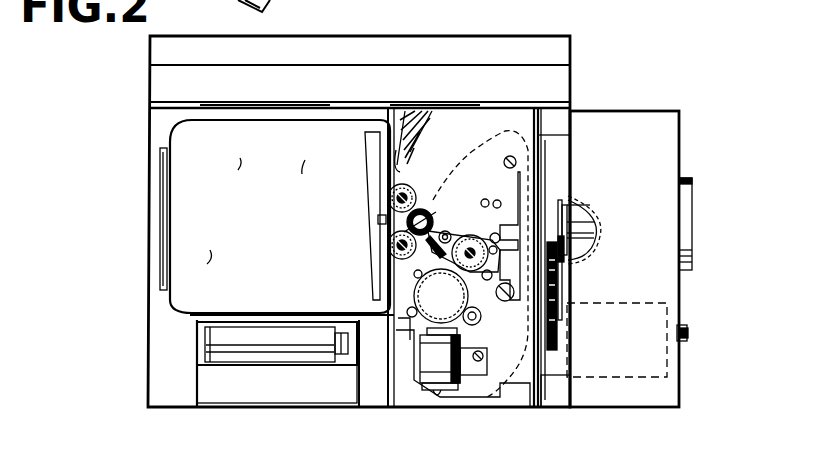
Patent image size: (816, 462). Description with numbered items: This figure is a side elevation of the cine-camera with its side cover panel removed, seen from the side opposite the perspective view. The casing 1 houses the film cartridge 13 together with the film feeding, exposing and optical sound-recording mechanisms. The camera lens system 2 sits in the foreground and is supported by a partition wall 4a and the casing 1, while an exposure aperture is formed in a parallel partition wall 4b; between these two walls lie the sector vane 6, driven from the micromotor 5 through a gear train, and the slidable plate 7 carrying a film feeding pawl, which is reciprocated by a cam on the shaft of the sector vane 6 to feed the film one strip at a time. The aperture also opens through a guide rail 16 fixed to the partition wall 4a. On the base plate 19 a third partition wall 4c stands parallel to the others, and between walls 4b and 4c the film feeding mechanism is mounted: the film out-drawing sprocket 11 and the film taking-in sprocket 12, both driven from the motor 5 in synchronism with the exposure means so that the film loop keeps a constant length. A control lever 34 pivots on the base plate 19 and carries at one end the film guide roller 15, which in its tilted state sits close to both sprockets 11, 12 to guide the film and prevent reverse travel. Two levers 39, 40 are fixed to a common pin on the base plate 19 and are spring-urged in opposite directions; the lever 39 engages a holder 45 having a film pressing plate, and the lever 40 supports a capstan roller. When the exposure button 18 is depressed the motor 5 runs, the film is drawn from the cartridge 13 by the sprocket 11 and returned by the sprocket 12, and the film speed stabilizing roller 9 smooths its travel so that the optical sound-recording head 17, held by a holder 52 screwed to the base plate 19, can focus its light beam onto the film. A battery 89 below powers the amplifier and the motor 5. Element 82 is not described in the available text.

The casing 1 is at (628, 110).
The camera lens system 2 is at (690, 196).
The partition wall 4a is at (561, 392).
The partition wall 4b is at (533, 392).
The partition wall 4c is at (397, 382).
The micromotor 5 is at (612, 377).
The sector vane 6 is at (566, 208).
The slidable plate 7 is at (546, 200).
The film speed stabilizing roller 9 is at (450, 306).
The film out-drawing sprocket 11 is at (388, 196).
The film taking-in sprocket 12 is at (388, 244).
The cartridge 13 is at (259, 198).
The film guide roller 15 is at (448, 158).
The guide rail 16 is at (543, 188).
The optical sound-recording head 17 is at (437, 393).
The exposure button 18 is at (688, 333).
The base plate 19 is at (468, 398).
The control lever 34 is at (468, 236).
The lever 39 is at (507, 301).
The lever 40 is at (481, 326).
The holder 45 is at (508, 168).
The holder 52 is at (470, 372).
The element 82 is at (279, 10).
The battery 89 is at (282, 392).